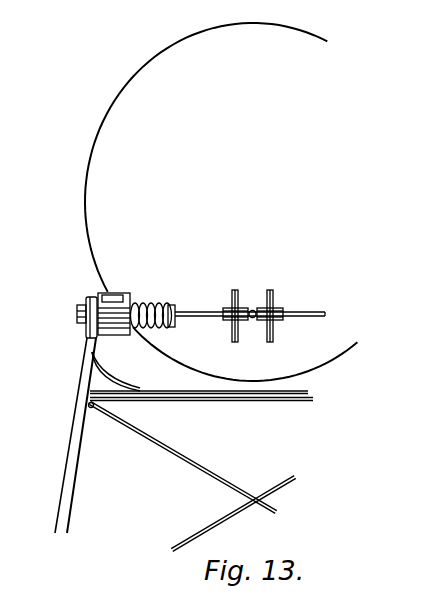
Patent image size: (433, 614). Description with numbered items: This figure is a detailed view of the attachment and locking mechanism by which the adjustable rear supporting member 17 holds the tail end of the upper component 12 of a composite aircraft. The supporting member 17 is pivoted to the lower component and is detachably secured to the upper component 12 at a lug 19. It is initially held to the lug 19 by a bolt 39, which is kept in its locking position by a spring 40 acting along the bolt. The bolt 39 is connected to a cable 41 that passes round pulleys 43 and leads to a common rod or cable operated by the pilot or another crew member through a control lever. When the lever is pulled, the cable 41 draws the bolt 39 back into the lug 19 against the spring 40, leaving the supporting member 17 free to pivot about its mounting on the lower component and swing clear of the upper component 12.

The upper component 12 is at (192, 53).
The rear supporting member 17 is at (75, 462).
The lug 19 is at (111, 303).
The bolt 39 is at (78, 316).
The spring 40 is at (143, 303).
The cable 41 is at (190, 312).
The pulley 43 is at (225, 319).